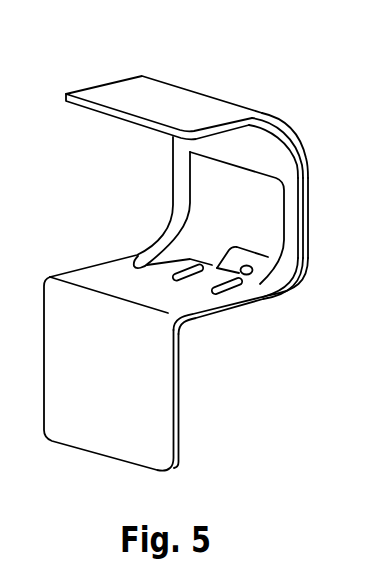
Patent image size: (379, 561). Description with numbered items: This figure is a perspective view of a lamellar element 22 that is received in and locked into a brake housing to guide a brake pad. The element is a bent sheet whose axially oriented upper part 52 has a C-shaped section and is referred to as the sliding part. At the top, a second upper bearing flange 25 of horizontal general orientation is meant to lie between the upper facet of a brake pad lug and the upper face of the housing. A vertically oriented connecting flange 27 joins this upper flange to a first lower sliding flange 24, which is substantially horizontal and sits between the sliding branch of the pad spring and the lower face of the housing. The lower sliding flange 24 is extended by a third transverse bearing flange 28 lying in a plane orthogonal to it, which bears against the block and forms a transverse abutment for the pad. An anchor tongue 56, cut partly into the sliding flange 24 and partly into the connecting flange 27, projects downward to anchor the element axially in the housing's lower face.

The lamellar element 22 is at (273, 81).
The second upper bearing flange 25 is at (122, 95).
The upper part 52 is at (312, 140).
The connecting flange 27 is at (309, 183).
The anchor tongue 56 is at (260, 234).
The first lower sliding flange 24 is at (213, 308).
The third transverse bearing flange 28 is at (174, 423).